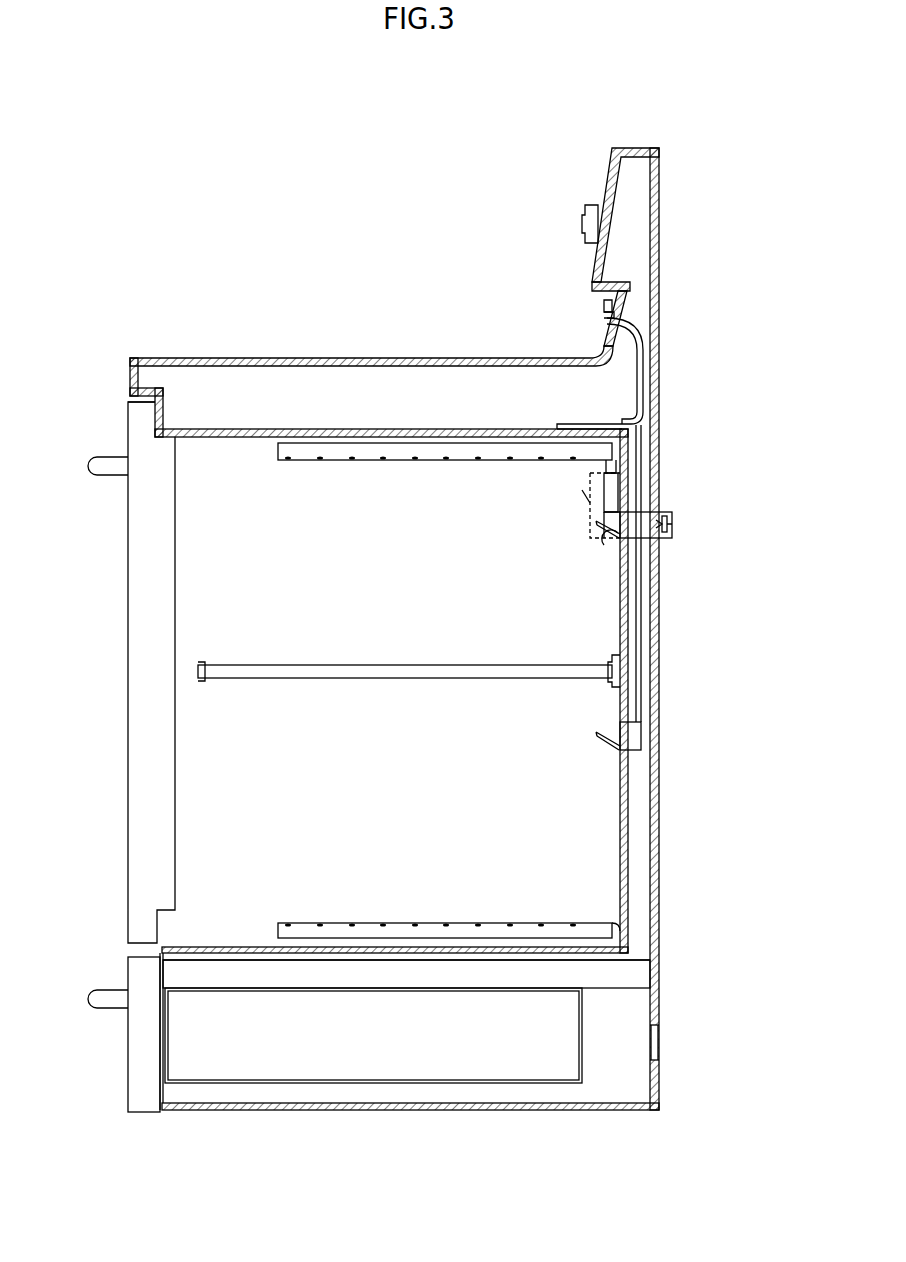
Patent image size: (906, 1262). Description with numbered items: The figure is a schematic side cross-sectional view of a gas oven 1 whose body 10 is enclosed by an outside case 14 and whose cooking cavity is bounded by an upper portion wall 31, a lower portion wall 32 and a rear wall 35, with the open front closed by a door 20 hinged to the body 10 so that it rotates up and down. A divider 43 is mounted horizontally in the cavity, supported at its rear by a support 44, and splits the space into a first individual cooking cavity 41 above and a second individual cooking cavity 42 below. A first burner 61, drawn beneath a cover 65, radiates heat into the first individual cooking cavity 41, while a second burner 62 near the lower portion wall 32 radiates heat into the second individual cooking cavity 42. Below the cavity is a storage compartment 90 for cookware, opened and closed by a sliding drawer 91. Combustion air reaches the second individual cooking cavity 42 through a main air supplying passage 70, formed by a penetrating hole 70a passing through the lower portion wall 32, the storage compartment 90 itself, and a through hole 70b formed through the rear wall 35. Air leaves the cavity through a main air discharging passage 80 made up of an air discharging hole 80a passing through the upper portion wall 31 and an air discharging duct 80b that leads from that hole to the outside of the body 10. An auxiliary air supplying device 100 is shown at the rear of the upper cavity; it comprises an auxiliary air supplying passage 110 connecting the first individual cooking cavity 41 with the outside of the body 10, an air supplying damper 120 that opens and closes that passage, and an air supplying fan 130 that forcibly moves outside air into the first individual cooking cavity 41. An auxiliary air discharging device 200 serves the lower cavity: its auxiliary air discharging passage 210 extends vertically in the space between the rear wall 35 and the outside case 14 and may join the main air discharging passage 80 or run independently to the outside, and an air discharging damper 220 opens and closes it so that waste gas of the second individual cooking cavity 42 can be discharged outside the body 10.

The gas oven 1 is at (390, 171).
The body 10 is at (680, 307).
The outside case 14 is at (660, 244).
The door 20 is at (142, 606).
The upper portion wall 31 is at (478, 432).
The lower portion wall 32 is at (355, 945).
The rear wall 35 is at (628, 850).
The first individual cooking cavity 41 is at (384, 576).
The second individual cooking cavity 42 is at (384, 808).
The divider 43 is at (200, 672).
The divider support 44 is at (620, 660).
The first burner 61 is at (427, 452).
The second burner 62 is at (425, 930).
The heater cover 65 is at (318, 458).
The main air supplying passage 70 is at (722, 962).
The penetrating hole 70a is at (512, 950).
The through hole 70b is at (658, 1038).
The main air discharging passage 80 is at (722, 355).
The air discharging hole 80a is at (581, 430).
The air discharging duct 80b is at (641, 380).
The storage compartment 90 is at (607, 1058).
The drawer 91 is at (142, 1056).
The auxiliary air supplying device 100 is at (738, 512).
The auxiliary air supplying passage 110 is at (640, 560).
The air supplying damper 120 is at (622, 530).
The air supplying fan 130 is at (675, 522).
The auxiliary air discharging device 200 is at (728, 685).
The auxiliary air discharging passage 210 is at (640, 700).
The air discharging damper 220 is at (624, 735).